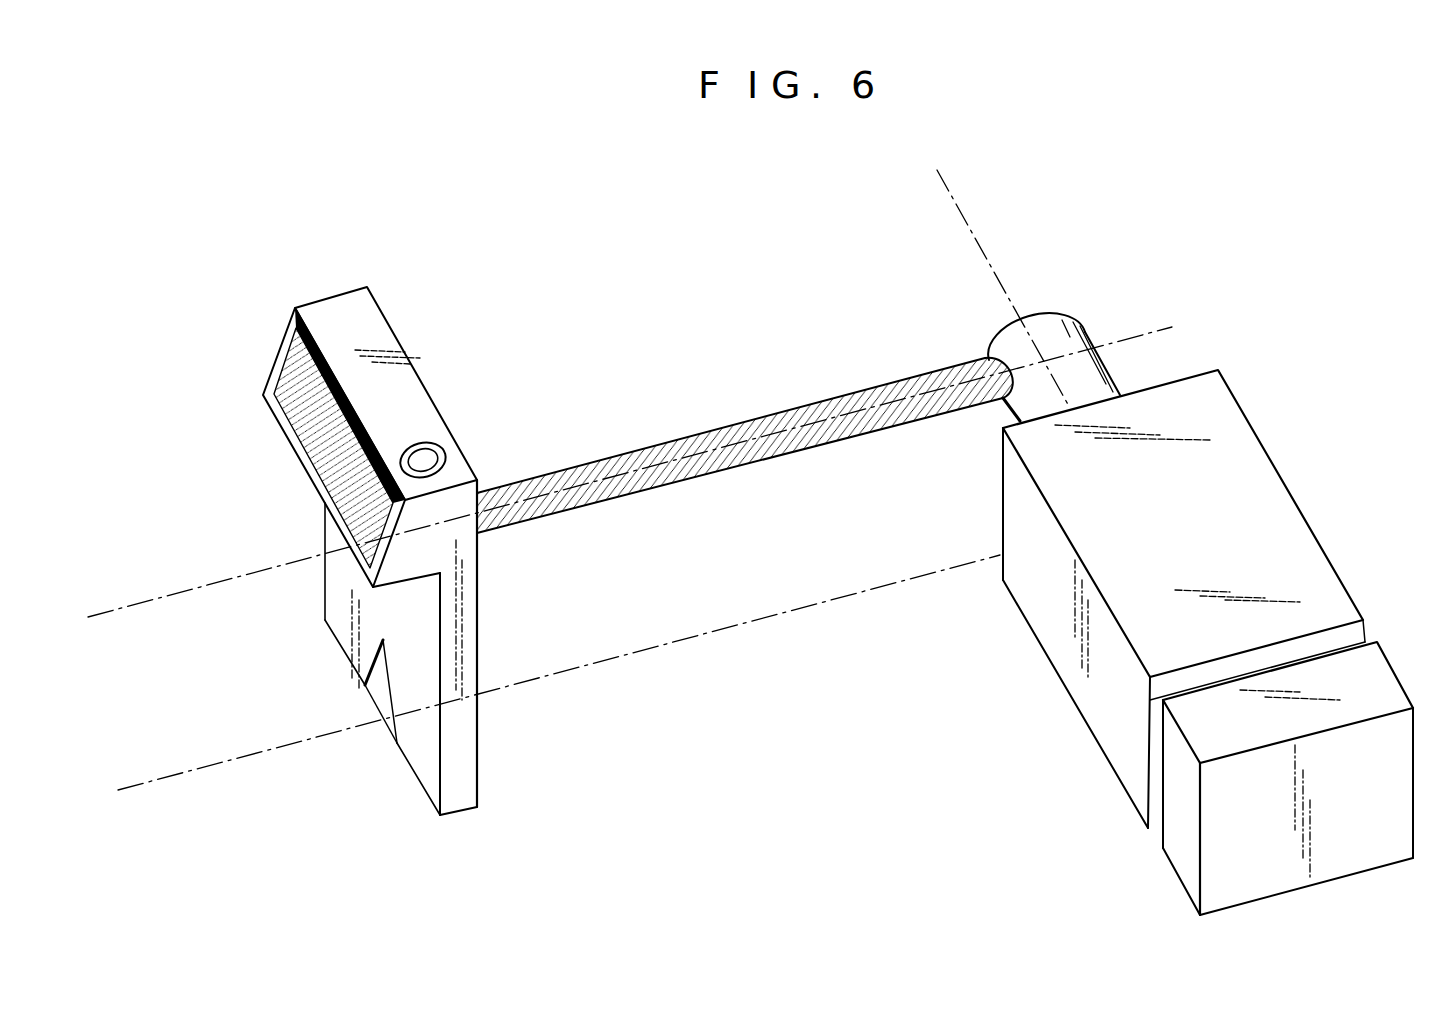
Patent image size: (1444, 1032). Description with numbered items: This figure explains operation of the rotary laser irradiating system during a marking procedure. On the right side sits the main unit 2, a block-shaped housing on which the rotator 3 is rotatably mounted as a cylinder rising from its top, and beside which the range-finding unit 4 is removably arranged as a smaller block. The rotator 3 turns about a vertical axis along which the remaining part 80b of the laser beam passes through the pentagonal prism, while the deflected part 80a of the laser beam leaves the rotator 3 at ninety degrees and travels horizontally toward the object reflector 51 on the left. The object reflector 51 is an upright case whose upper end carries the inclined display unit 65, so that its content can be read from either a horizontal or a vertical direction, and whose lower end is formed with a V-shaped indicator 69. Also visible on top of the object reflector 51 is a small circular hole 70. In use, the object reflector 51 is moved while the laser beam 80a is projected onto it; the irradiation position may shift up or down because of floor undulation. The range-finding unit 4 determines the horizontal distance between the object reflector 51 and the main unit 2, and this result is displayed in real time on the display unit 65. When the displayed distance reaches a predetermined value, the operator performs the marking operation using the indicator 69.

The main unit 2 is at (1311, 525).
The rotator 3 is at (1117, 384).
The range-finding unit 4 is at (1394, 668).
The object reflector 51 is at (372, 551).
The display unit 65 is at (293, 372).
The indicator 69 is at (378, 700).
The hole 70 is at (427, 442).
The part of the laser beam 80a is at (643, 490).
The remaining part of the laser beam 80b is at (947, 180).